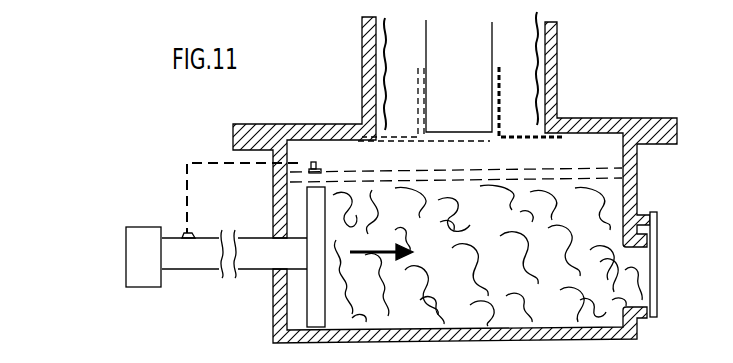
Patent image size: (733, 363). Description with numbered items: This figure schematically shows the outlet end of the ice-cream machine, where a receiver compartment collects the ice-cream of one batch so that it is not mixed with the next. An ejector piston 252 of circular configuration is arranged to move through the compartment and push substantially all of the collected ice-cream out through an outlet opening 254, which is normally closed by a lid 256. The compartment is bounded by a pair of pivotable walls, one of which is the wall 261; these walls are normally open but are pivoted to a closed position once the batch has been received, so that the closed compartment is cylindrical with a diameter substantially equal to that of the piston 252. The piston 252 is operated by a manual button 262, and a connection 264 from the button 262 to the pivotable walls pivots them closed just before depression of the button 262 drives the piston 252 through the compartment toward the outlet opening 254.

The ejector piston 252 is at (313, 298).
The outlet opening 254 is at (640, 280).
The lid 256 is at (658, 291).
The pivotable wall 261 is at (353, 172).
The manual button 262 is at (133, 287).
The connection 264 is at (185, 158).